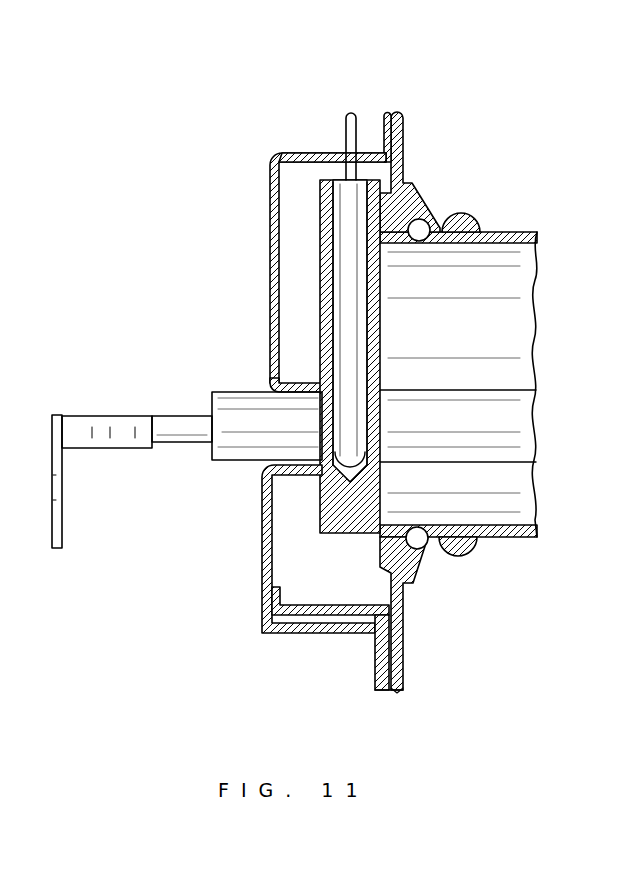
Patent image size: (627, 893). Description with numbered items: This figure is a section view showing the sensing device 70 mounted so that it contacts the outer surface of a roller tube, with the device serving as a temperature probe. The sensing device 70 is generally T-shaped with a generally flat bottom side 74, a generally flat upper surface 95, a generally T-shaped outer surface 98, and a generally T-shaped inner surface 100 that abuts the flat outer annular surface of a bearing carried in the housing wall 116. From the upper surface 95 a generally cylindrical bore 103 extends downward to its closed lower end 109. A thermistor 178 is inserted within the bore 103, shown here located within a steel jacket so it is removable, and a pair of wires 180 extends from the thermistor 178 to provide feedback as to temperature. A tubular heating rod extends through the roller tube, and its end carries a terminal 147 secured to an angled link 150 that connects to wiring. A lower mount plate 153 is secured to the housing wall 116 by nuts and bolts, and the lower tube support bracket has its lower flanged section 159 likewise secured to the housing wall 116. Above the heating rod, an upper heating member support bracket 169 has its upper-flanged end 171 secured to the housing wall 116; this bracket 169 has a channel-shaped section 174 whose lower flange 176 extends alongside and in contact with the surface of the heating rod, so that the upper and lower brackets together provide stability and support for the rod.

The sensing device 70 is at (303, 200).
The bottom side 74 is at (333, 531).
The upper surface 95 is at (324, 180).
The outer surface 98 is at (322, 245).
The inner surface 100 is at (378, 382).
The cylindrical bore 103 is at (355, 292).
The lower end 109 is at (358, 476).
The housing wall 116 is at (404, 138).
The terminal 147 is at (175, 443).
The angled link 150 is at (97, 452).
The lower mount plate 153 is at (388, 692).
The lower flanged section 159 is at (377, 657).
The upper heating member support bracket 169 is at (255, 290).
The upper-flanged end 171 is at (384, 122).
The channel-shaped section 174 is at (253, 322).
The lower flange 176 is at (307, 383).
The thermistor 178 is at (353, 355).
The wires 180 is at (346, 127).